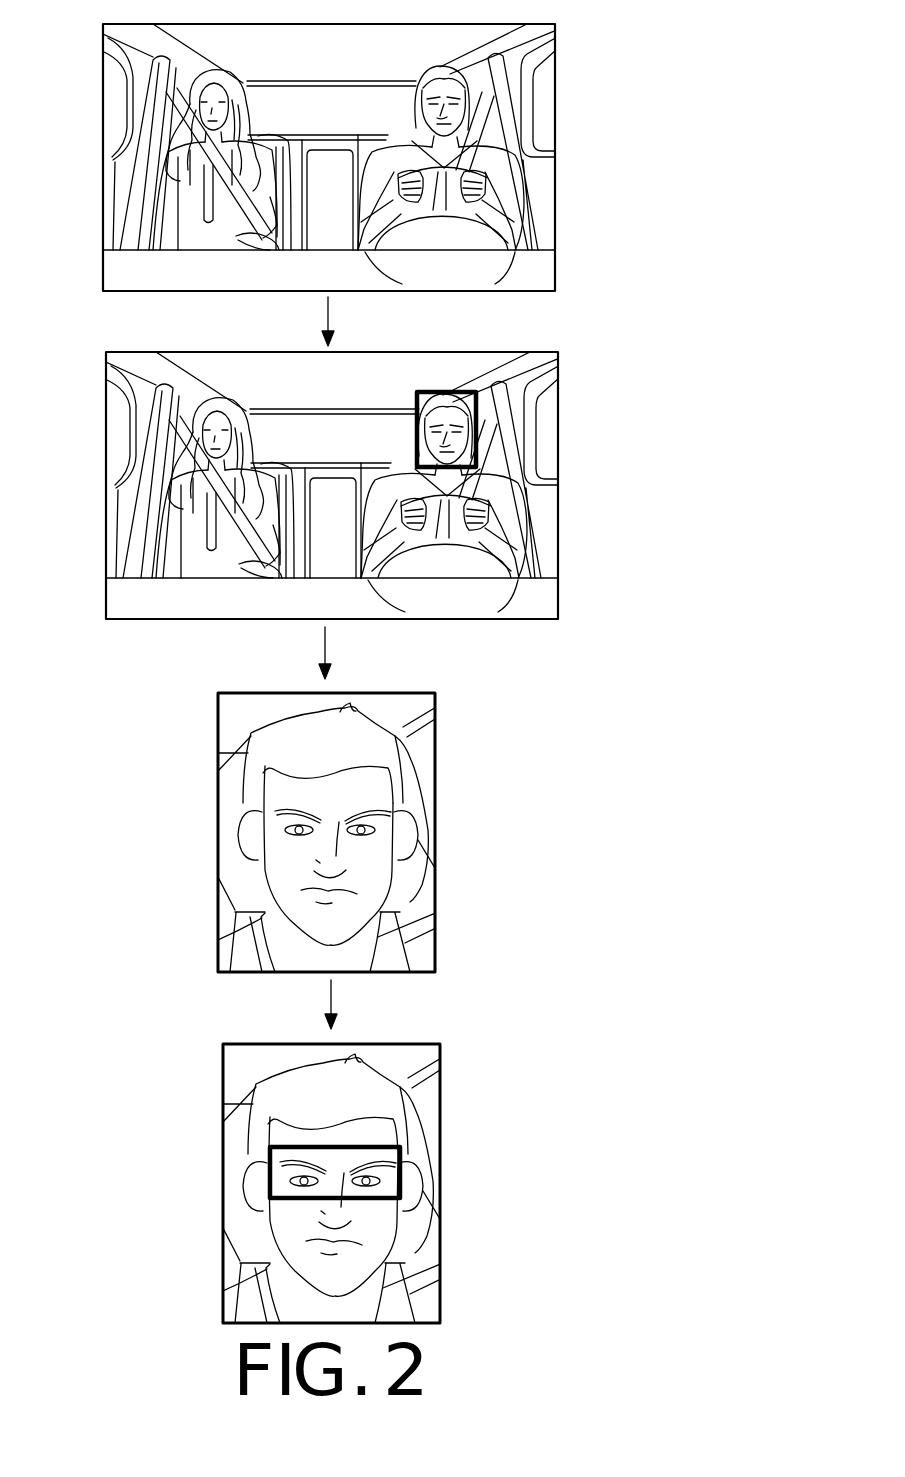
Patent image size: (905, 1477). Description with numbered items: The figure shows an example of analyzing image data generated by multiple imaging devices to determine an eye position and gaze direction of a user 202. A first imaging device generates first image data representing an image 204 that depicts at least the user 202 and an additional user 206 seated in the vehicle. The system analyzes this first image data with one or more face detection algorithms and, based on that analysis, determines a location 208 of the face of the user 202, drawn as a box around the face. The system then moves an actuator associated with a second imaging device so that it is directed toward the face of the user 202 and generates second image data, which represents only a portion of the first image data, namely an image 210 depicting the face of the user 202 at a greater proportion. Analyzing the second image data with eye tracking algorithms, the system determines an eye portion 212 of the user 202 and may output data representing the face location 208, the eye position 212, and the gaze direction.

The user 202 is at (497, 187).
The image 204 is at (556, 104).
The additional user 206 is at (197, 217).
The location of the face 208 is at (417, 394).
The image 210 is at (435, 782).
The eye portion 212 is at (270, 1148).